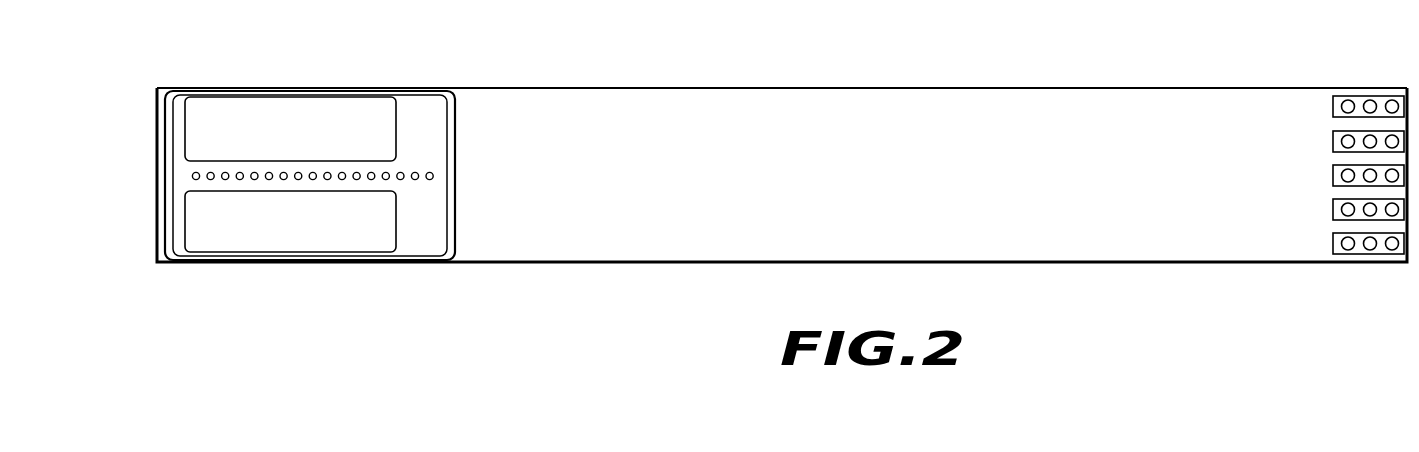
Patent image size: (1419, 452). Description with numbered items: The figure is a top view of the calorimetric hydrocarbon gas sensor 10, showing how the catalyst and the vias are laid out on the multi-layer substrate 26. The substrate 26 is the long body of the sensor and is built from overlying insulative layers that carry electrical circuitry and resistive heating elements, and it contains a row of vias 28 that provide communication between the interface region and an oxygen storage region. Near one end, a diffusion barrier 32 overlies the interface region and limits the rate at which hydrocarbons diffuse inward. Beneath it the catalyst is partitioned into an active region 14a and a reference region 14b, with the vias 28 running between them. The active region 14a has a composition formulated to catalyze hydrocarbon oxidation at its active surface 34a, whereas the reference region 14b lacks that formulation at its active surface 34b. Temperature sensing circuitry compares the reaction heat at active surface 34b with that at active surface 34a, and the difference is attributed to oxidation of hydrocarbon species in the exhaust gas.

The calorimetric hydrocarbon gas sensor 10 is at (213, 44).
The multi-layer substrate 26 is at (677, 108).
The vias 28 is at (192, 176).
The diffusion barrier 32 is at (210, 93).
The active surface 34a is at (245, 107).
The active region 14a is at (378, 108).
The active surface 34b is at (257, 237).
The reference region 14b is at (380, 242).